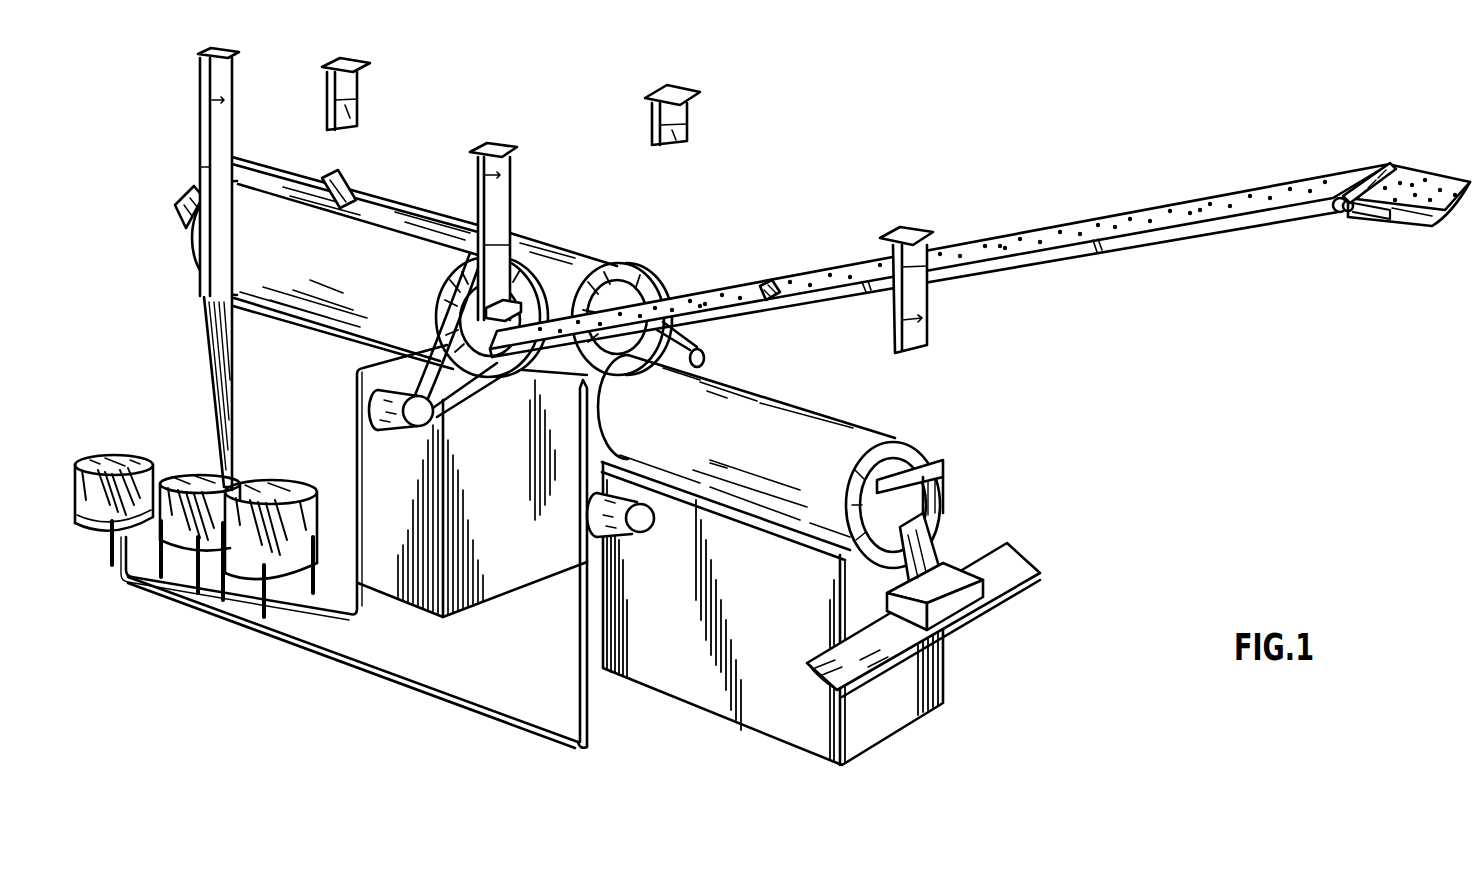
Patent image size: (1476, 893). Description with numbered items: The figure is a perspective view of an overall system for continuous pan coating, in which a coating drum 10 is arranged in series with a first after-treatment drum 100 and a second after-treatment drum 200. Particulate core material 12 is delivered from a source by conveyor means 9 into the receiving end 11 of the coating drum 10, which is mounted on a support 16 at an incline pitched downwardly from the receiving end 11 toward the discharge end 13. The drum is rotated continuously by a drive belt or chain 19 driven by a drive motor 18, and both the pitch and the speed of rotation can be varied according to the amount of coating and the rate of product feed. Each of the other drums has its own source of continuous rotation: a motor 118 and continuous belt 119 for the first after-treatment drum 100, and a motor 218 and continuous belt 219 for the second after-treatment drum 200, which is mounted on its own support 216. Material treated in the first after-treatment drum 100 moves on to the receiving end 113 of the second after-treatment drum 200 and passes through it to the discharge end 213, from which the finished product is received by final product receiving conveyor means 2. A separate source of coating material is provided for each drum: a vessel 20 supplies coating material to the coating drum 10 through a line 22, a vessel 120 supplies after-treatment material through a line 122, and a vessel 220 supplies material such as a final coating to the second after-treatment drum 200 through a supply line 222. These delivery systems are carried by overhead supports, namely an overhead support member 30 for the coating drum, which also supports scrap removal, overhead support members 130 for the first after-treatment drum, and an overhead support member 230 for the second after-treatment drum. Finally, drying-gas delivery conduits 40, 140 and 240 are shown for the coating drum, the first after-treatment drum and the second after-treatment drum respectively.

The final product receiving conveyor means 2 is at (993, 593).
The conveyor means 9 is at (1295, 183).
The coating drum 10 is at (399, 293).
The receiving end 11 is at (494, 365).
The particulate core material 12 is at (716, 302).
The discharge end 13 is at (192, 242).
The support 16 is at (497, 568).
The drive motor 18 is at (376, 420).
The drive belt or chain 19 is at (451, 405).
The vessel 20 is at (255, 560).
The line 22 is at (360, 600).
The overhead support member 30 is at (200, 99).
The drying-gas delivery conduit 40 is at (180, 206).
The first after-treatment drum 100 is at (578, 267).
The receiving end 113 is at (598, 388).
The motor 118 is at (706, 362).
The continuous belt 119 is at (702, 334).
The vessel 120 is at (190, 550).
The line 122 is at (233, 368).
The overhead support members 130 is at (358, 90).
The drying-gas delivery conduit 140 is at (338, 183).
The second after-treatment drum 200 is at (783, 423).
The discharge end 213 is at (907, 513).
The support 216 is at (706, 688).
The motor 218 is at (633, 533).
The continuous belt 219 is at (581, 469).
The vessel 220 is at (100, 512).
The supply line 222 is at (440, 693).
The overhead support member 230 is at (917, 301).
The drying-gas delivery conduit 240 is at (932, 455).